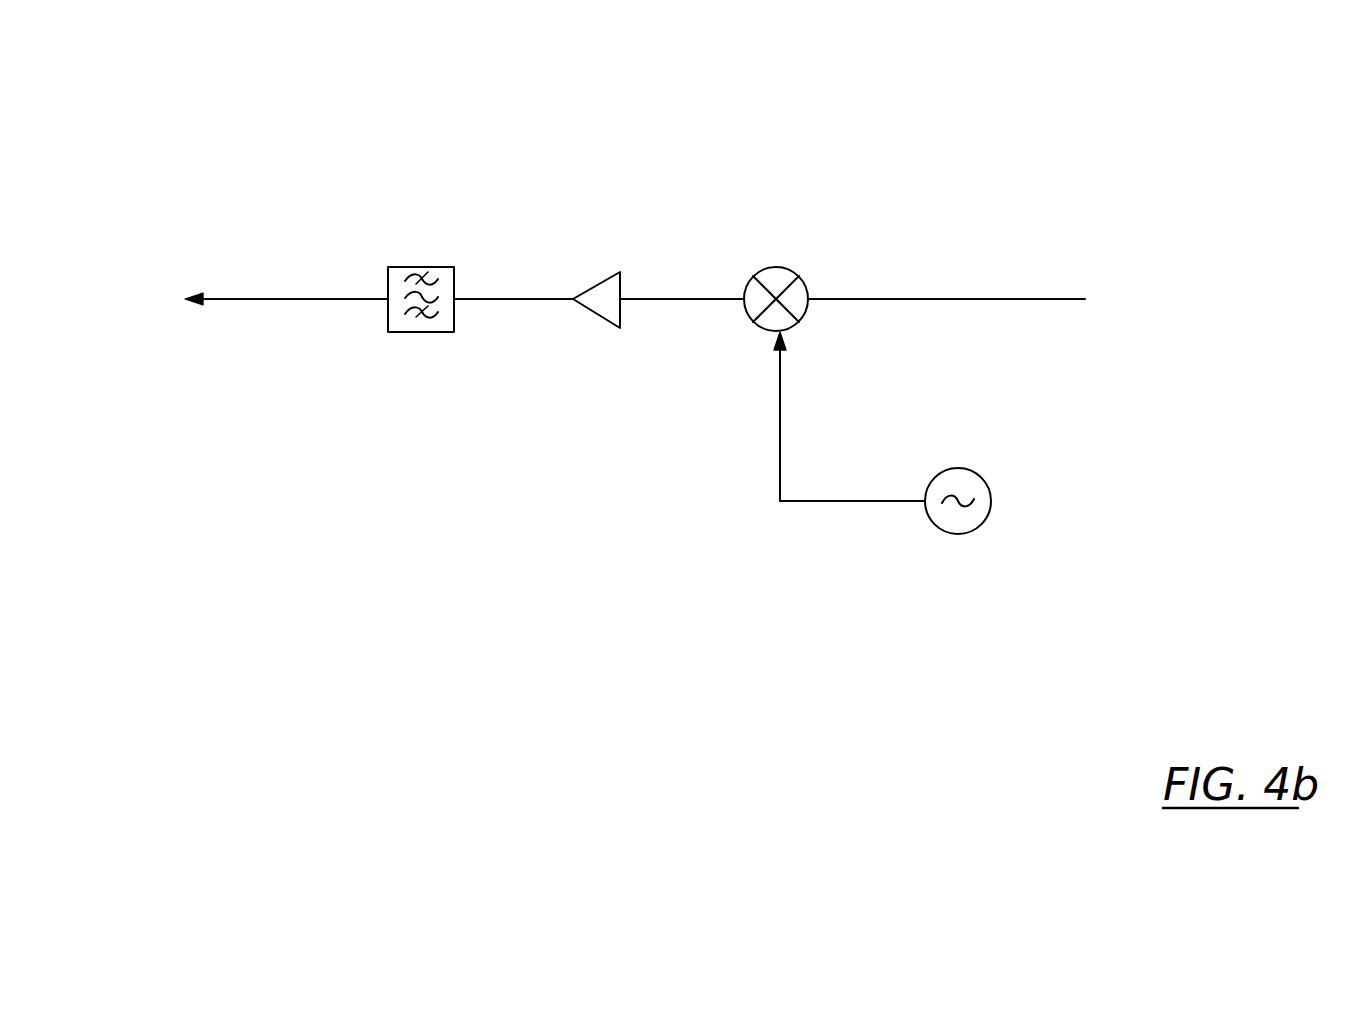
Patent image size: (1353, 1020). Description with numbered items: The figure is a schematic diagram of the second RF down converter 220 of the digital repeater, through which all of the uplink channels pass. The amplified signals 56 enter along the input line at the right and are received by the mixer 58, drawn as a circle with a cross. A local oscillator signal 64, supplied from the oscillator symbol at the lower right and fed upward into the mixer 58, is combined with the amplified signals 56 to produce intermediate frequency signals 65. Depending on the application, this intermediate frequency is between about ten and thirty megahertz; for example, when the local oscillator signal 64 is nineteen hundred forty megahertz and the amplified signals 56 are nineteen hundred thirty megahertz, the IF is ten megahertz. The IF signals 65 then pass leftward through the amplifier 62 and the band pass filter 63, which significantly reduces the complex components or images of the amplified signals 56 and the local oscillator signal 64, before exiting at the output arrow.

The second RF down converter 220 is at (967, 146).
The amplified signals 56 is at (998, 297).
The mixer 58 is at (777, 267).
The amplifier 62 is at (605, 275).
The band pass filter 63 is at (409, 267).
The local oscillator (LO) signal 64 is at (855, 501).
The intermediate frequency (IF) signals 65 is at (362, 299).